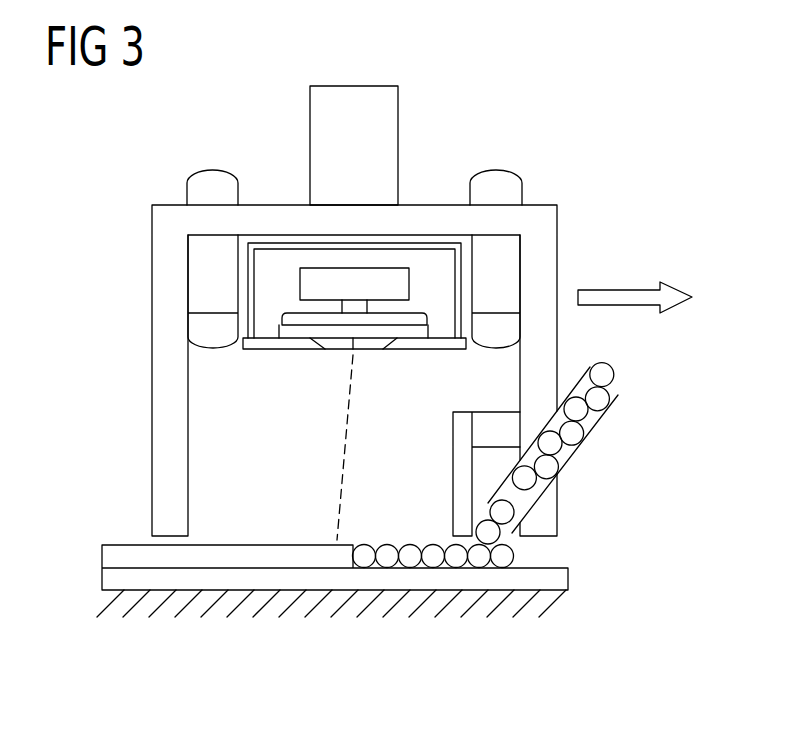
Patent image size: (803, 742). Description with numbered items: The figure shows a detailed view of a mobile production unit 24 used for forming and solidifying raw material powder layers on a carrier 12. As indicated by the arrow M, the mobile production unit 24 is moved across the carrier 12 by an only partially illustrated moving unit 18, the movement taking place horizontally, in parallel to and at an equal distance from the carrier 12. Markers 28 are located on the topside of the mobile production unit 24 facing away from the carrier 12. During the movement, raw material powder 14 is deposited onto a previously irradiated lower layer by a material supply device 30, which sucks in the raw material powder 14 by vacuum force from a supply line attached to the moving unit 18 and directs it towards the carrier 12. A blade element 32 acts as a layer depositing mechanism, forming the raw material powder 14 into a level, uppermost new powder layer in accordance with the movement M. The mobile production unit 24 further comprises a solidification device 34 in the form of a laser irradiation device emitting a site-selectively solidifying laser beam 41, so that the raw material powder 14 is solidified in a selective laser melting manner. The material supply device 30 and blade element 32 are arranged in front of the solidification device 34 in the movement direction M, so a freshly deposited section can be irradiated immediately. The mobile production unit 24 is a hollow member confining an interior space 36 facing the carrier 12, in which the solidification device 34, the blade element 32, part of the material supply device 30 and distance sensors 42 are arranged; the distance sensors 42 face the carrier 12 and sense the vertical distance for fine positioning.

The carrier 12 is at (114, 644).
The raw material powder 14 is at (518, 501).
The moving unit 18 is at (388, 124).
The mobile production unit 24 is at (541, 213).
The marker 28 is at (497, 181).
The material supply device 30 is at (648, 403).
The blade element 32 is at (455, 480).
The solidification device 34 is at (271, 350).
The interior space 36 is at (268, 533).
The laser beam 41 is at (343, 456).
The distance sensor 42 is at (200, 285).
The arrow M is at (628, 289).